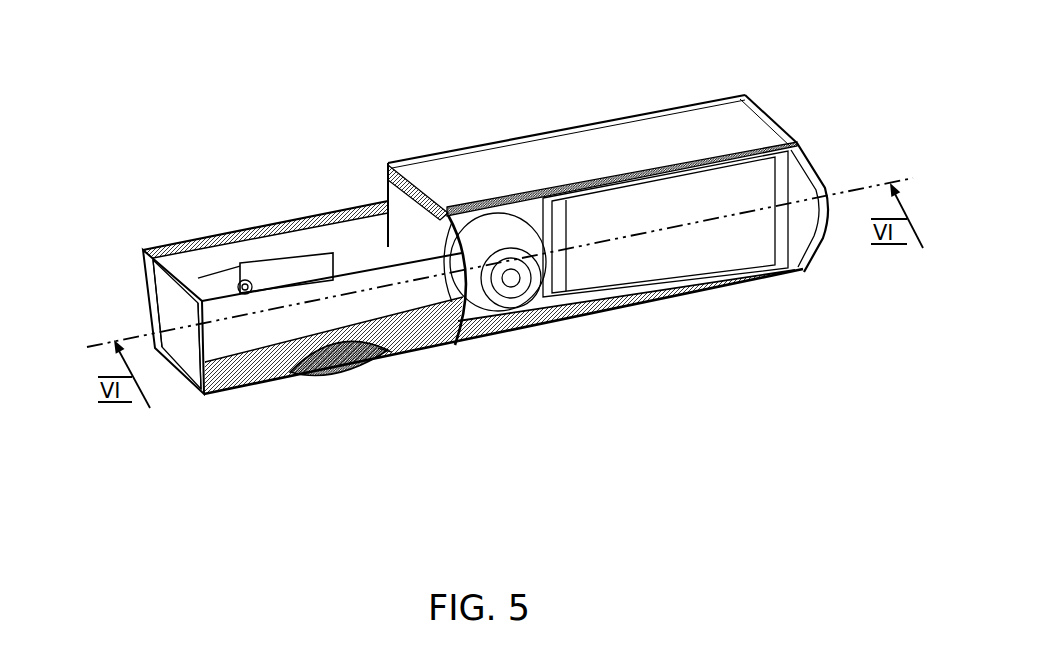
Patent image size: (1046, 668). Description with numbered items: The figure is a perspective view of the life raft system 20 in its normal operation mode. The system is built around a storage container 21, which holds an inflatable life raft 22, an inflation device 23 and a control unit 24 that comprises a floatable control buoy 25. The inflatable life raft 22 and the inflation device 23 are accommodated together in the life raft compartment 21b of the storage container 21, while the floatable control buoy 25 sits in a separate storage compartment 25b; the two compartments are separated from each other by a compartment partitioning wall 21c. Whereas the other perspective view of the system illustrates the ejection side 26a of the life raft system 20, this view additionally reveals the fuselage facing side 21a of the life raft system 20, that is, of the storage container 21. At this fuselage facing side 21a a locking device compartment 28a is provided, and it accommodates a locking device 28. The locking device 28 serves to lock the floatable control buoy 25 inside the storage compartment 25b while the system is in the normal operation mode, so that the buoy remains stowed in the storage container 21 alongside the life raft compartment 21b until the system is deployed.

The life raft system 20 is at (308, 80).
The storage container 21 is at (528, 303).
The fuselage facing side 21a is at (590, 147).
The life raft compartment 21b is at (630, 312).
The compartment partitioning wall 21c is at (447, 212).
The inflatable life raft 22 is at (711, 253).
The inflation device 23 is at (477, 302).
The control unit 24 is at (340, 386).
The floatable control buoy 25 is at (323, 363).
The storage compartment 25b is at (388, 368).
The ejection side 26a is at (257, 396).
The locking device 28 is at (248, 255).
The locking device compartment 28a is at (174, 258).